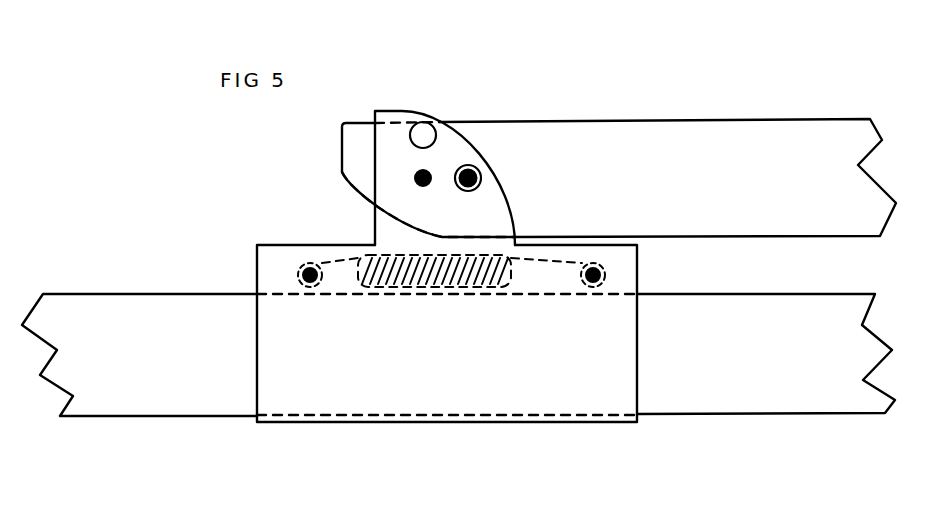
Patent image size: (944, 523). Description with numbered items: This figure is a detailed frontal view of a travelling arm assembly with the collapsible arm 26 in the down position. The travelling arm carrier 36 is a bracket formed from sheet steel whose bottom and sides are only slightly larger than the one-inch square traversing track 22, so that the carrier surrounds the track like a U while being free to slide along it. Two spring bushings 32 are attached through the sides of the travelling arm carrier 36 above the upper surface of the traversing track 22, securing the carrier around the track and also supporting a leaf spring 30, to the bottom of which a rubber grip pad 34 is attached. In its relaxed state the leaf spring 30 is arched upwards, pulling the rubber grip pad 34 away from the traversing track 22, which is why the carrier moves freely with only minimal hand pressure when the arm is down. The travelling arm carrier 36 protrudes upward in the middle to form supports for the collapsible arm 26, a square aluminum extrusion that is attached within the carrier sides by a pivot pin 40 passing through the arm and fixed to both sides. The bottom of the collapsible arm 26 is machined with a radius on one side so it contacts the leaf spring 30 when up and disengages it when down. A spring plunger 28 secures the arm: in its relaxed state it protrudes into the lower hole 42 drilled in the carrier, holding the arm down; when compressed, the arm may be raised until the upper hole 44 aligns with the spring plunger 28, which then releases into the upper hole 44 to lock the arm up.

The traversing track 22 is at (200, 351).
The collapsible arm 26 is at (640, 170).
The spring plunger 28 is at (475, 172).
The leaf spring 30 is at (543, 262).
The spring bushings 32 is at (308, 280).
The rubber grip pad 34 is at (437, 270).
The travelling arm carrier 36 is at (380, 360).
The pivot pin 40 is at (424, 178).
The lower hole 42 is at (482, 173).
The upper hole 44 is at (426, 134).